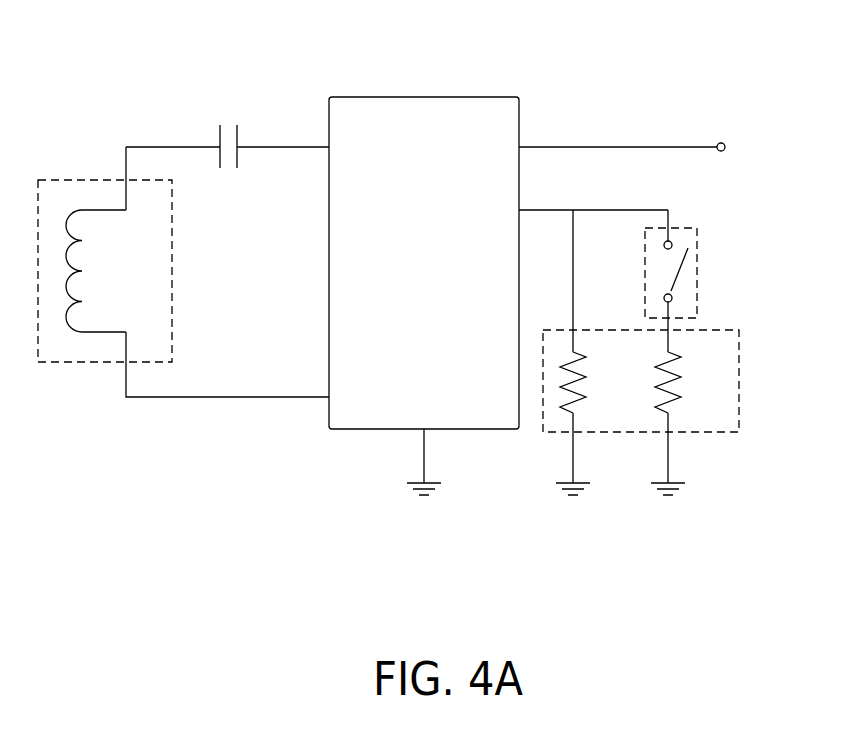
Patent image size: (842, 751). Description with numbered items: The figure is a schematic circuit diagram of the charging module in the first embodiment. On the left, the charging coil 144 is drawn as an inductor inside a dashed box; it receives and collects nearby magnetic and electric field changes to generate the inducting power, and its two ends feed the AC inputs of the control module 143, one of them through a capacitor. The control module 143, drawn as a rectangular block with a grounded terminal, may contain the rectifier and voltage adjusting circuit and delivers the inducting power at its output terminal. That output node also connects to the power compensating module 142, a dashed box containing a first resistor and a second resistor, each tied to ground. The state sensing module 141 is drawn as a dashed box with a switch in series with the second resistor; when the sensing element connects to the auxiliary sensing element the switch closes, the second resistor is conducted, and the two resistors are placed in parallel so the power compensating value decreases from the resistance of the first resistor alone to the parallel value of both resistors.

The state sensing module 141 is at (697, 288).
The power compensating module 142 is at (739, 400).
The control module 143 is at (436, 97).
The charging coil 144 is at (88, 180).